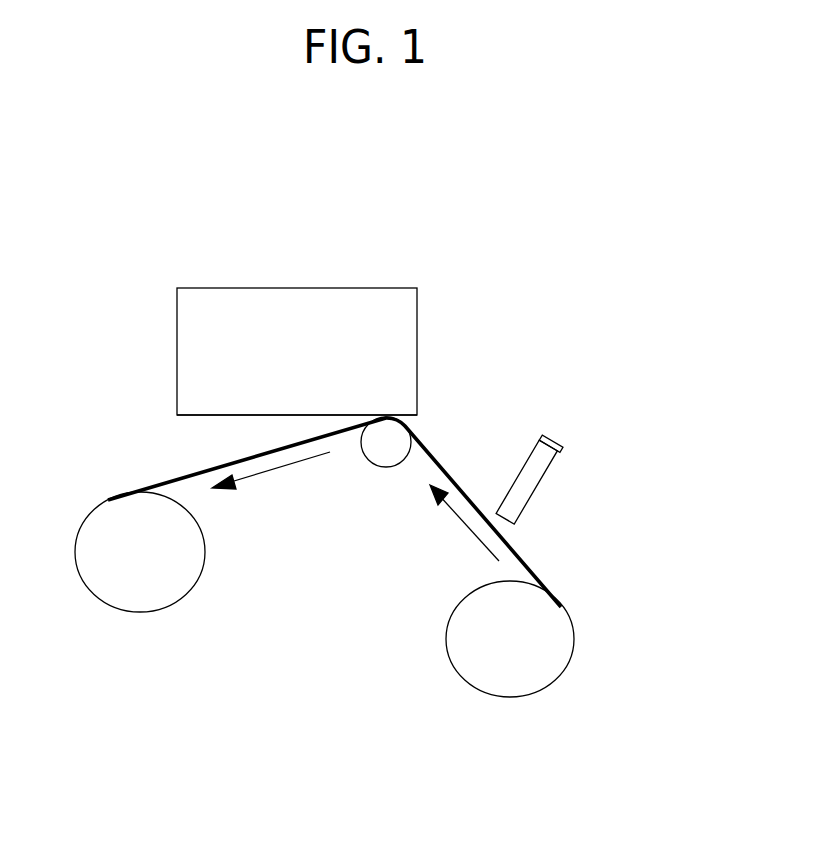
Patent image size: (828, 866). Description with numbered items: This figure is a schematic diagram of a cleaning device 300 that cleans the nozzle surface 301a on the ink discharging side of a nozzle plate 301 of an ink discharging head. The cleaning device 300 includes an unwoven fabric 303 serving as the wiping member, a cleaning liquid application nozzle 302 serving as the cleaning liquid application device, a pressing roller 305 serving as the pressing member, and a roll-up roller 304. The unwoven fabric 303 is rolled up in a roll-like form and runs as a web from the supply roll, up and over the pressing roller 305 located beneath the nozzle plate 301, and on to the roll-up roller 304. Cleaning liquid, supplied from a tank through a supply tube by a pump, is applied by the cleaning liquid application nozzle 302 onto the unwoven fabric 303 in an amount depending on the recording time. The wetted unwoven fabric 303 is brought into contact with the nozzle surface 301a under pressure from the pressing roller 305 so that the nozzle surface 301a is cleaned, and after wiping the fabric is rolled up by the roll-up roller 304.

The cleaning device 300 is at (528, 238).
The nozzle plate 301 is at (295, 302).
The nozzle surface 301a is at (218, 416).
The cleaning liquid application nozzle 302 is at (556, 437).
The unwoven fabric 303 is at (520, 561).
The roll-up roller 304 is at (130, 600).
The pressing roller 305 is at (398, 437).